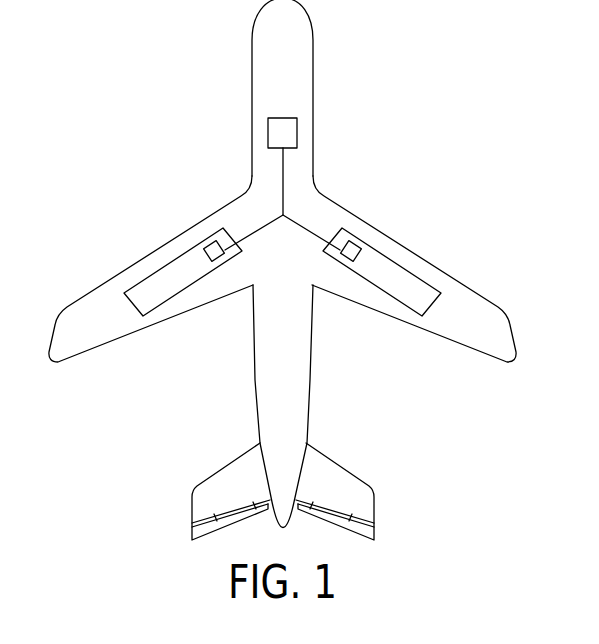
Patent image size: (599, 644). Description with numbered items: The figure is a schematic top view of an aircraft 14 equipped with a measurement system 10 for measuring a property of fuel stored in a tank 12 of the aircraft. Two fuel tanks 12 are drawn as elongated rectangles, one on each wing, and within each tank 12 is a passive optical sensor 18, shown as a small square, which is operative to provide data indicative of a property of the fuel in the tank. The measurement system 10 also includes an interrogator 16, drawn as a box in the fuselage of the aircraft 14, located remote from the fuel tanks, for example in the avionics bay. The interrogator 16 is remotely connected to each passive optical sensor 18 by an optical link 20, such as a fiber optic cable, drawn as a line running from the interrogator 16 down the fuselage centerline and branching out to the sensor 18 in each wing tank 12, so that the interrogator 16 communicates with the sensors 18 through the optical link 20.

The measurement system 10 is at (372, 118).
The tank 12 is at (189, 249).
The aircraft 14 is at (313, 70).
The interrogator 16 is at (268, 135).
The passive optical sensor 18 is at (215, 242).
The optical link 20 is at (282, 192).